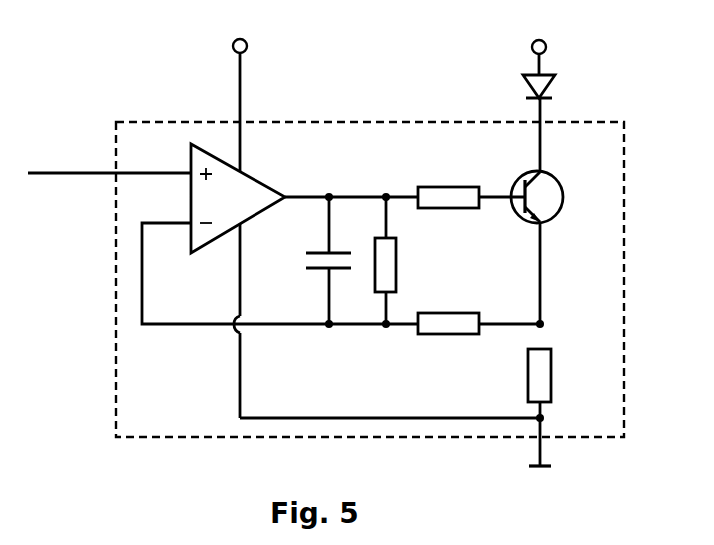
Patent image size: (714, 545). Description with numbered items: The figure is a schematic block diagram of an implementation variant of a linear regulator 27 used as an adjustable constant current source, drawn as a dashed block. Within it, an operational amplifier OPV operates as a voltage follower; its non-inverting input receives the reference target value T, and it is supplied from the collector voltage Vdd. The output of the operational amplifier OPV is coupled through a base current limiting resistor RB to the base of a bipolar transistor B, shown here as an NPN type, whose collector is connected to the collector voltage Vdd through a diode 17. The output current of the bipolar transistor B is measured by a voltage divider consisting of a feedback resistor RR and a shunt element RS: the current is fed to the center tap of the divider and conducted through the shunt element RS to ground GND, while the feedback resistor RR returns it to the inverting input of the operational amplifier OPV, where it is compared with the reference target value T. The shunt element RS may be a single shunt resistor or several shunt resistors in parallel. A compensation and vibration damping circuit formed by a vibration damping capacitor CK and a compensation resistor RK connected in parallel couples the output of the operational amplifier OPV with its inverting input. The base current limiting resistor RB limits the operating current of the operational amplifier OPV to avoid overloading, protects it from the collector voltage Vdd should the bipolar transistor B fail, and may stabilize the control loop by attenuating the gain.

The linear regulator 27 is at (157, 112).
The diode 17 is at (550, 80).
The reference target value T is at (57, 173).
The operational amplifier OPV is at (270, 188).
The vibration damping capacitor CK is at (306, 264).
The compensation resistor RK is at (397, 255).
The base current limiting resistor RB is at (432, 187).
The feedback resistor RR is at (457, 336).
The shunt element RS is at (552, 368).
The bipolar transistor B is at (564, 197).
The collector voltage Vdd is at (247, 46).
The ground GND is at (551, 464).